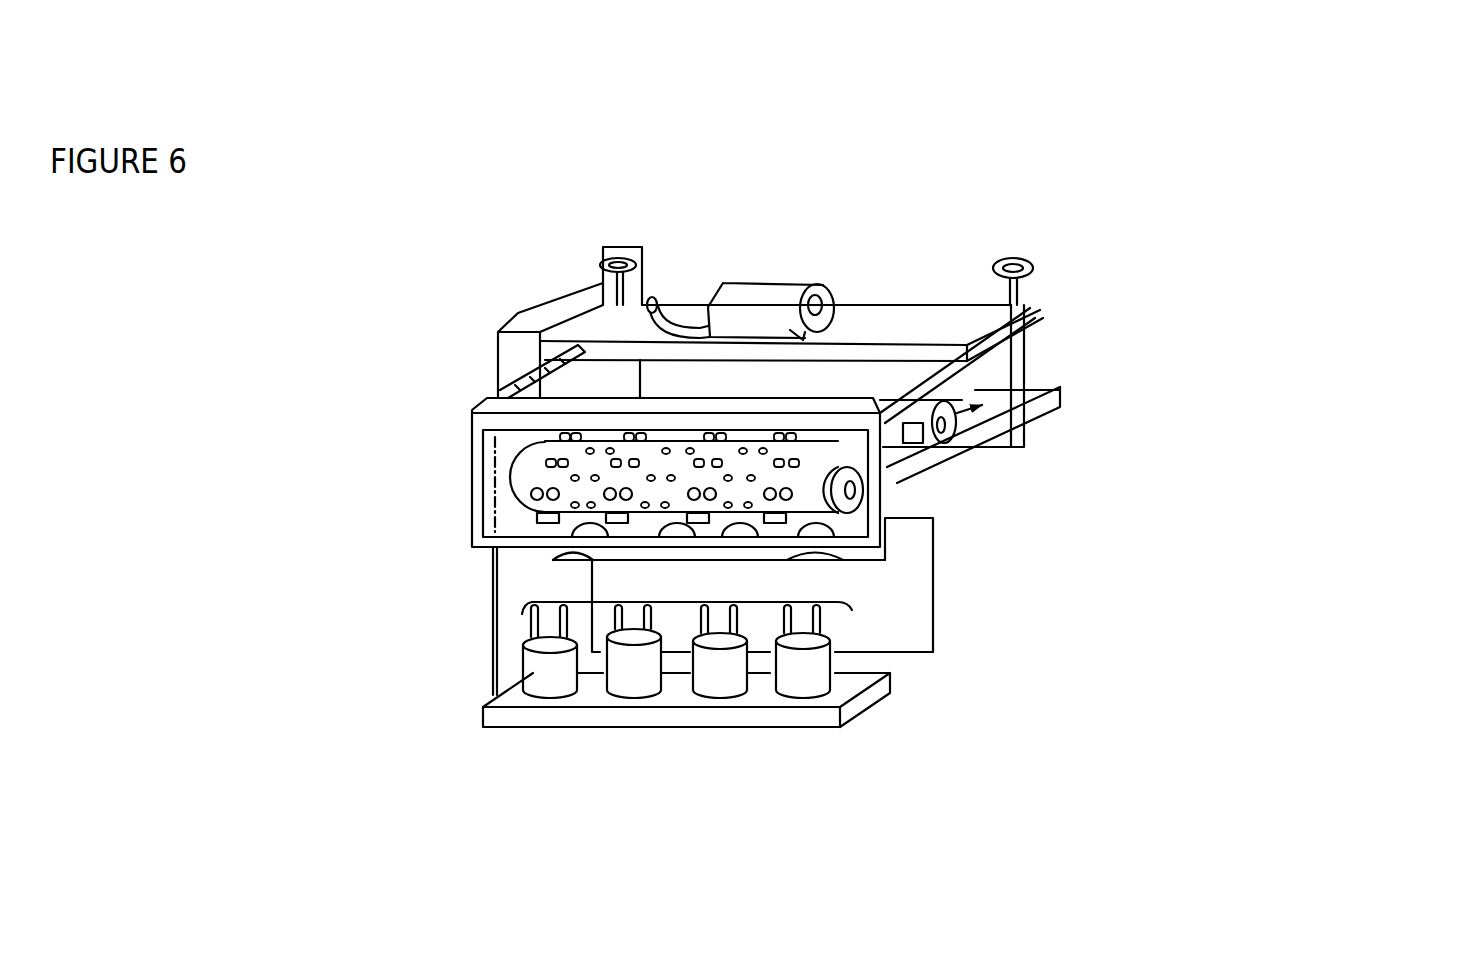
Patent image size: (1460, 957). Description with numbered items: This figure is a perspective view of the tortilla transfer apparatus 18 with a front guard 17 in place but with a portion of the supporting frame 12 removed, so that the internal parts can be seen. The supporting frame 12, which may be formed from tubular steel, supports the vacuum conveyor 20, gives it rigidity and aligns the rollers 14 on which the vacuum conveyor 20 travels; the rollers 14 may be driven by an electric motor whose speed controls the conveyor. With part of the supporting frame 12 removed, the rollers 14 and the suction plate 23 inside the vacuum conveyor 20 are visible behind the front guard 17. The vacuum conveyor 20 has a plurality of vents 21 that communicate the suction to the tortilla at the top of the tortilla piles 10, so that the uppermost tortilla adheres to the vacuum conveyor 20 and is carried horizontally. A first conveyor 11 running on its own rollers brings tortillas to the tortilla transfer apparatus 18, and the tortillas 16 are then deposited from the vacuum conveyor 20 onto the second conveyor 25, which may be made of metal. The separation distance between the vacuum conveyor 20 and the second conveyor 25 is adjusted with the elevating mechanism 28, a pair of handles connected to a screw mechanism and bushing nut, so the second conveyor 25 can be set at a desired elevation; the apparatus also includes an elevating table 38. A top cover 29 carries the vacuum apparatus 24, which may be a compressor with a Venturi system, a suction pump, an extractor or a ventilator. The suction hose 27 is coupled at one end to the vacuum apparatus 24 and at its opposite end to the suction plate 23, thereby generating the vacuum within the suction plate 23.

The tortilla piles 10 is at (687, 631).
The first conveyor 11 is at (790, 727).
The supporting frame 12 is at (490, 347).
The rollers 14 is at (950, 400).
The tortillas 16 is at (928, 460).
The front housing frame 17 is at (462, 433).
The tortilla transfer apparatus 18 is at (1230, 110).
The vacuum conveyor 20 is at (585, 468).
The vents 21 is at (772, 500).
The suction plate 23 is at (893, 470).
The vacuum apparatus 24 is at (758, 302).
The second conveyor 25 is at (1067, 407).
The suction hose 27 is at (658, 309).
The elevating mechanism 28 is at (608, 263).
The top cover 29 is at (903, 320).
The elevating table 38 is at (917, 542).